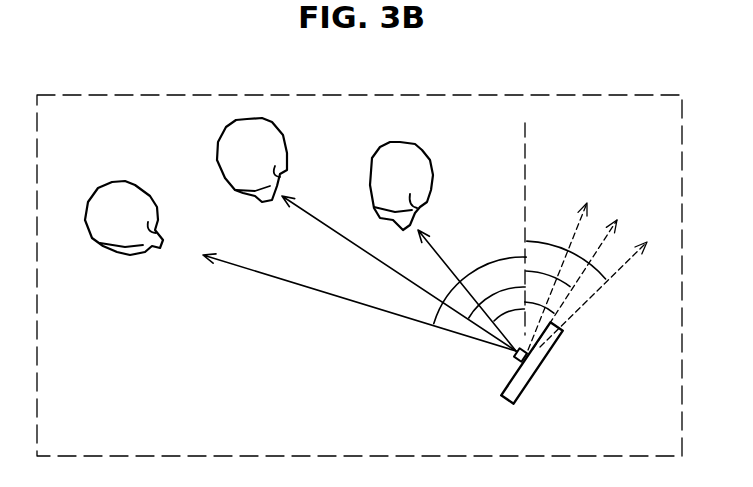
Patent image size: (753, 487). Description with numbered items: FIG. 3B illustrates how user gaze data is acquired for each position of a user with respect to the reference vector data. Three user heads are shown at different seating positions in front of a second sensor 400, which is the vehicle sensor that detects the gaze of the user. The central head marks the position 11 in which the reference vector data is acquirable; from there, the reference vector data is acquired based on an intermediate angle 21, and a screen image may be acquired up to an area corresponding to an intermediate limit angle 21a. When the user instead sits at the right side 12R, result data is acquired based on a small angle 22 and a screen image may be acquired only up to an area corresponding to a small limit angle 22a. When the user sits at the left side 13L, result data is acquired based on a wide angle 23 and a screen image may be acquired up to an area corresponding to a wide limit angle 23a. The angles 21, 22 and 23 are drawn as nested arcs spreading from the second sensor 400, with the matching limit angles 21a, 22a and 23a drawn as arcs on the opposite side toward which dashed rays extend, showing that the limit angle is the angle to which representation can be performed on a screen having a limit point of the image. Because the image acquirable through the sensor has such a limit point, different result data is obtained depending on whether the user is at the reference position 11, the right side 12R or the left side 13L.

The position in which the reference vector data is acquirable 11 is at (272, 122).
The right side position 12R is at (423, 151).
The left side position 13L is at (115, 182).
The intermediate angle 21 is at (468, 318).
The small angle 22 is at (494, 323).
The wide angle 23 is at (484, 265).
The intermediate limit angle 21a is at (571, 287).
The small limit angle 22a is at (554, 314).
The wide limit angle 23a is at (537, 243).
The second sensor 400 is at (508, 403).